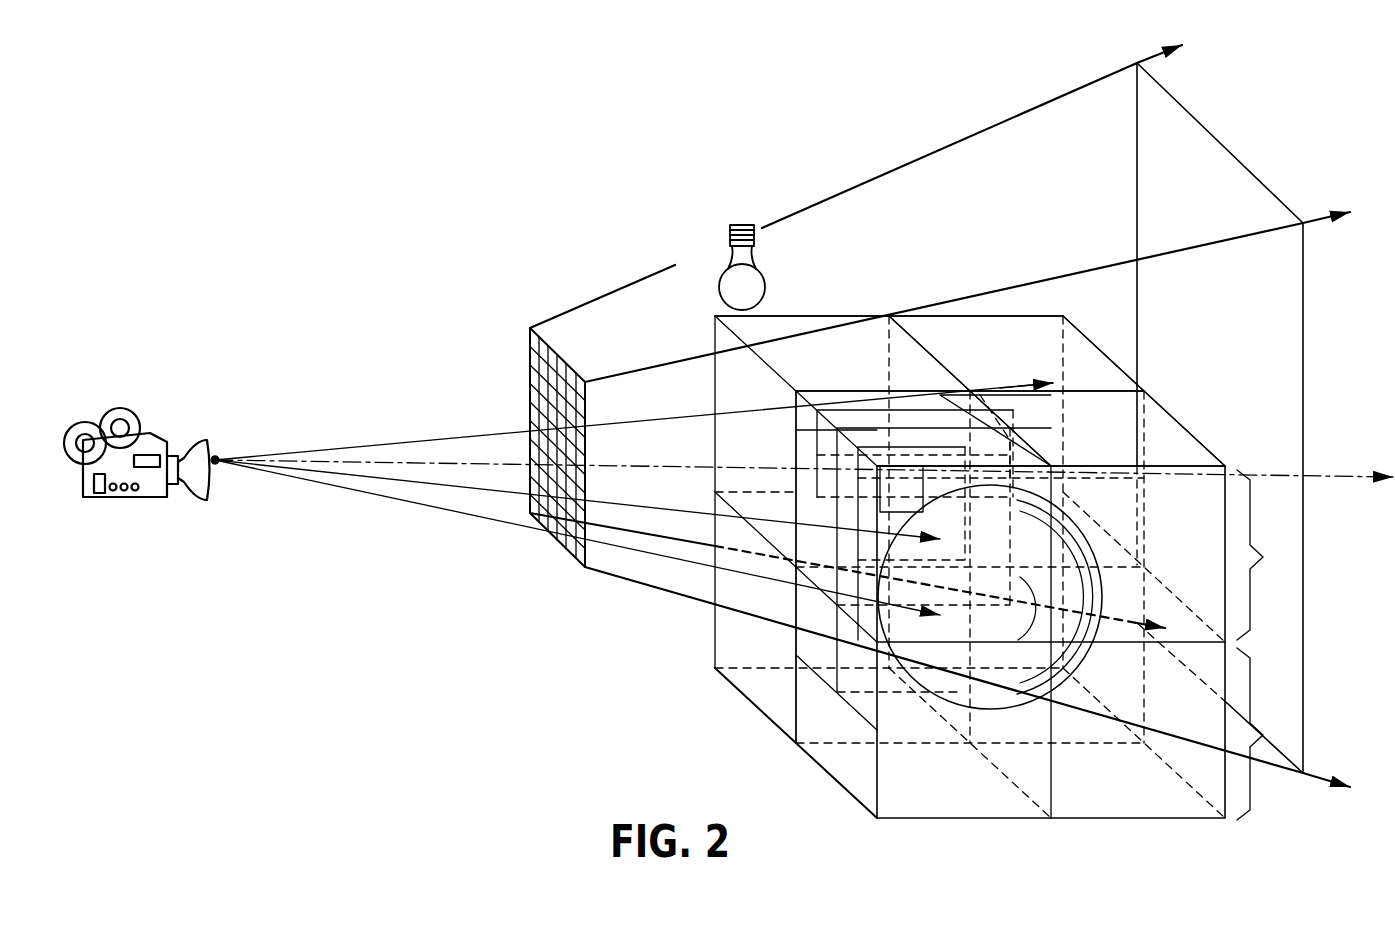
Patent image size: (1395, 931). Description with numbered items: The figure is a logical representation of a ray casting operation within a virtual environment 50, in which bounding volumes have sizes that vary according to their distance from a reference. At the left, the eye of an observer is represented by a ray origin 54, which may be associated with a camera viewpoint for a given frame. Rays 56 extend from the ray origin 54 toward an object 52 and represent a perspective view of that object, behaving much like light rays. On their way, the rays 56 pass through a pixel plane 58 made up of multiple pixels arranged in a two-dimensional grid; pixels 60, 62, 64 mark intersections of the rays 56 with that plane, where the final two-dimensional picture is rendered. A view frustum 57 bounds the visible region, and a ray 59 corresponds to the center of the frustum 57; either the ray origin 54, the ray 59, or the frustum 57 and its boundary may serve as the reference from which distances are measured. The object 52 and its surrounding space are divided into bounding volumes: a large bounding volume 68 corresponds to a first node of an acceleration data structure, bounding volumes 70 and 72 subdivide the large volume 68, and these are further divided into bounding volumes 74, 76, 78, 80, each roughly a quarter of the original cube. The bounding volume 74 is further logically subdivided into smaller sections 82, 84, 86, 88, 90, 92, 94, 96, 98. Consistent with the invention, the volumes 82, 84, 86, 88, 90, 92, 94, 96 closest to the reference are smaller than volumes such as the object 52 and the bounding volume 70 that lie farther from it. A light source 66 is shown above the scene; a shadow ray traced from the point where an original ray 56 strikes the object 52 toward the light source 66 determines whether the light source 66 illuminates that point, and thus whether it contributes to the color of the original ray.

The virtual environment 50 is at (662, 176).
The object 52 is at (913, 690).
The ray origin 54 is at (218, 452).
The rays 56 is at (395, 450).
The view frustum 57 is at (893, 163).
The pixel plane 58 is at (548, 532).
The ray 59 is at (437, 470).
The pixel 60 is at (540, 445).
The pixel 62 is at (530, 430).
The pixel 64 is at (567, 540).
The light source 66 is at (728, 275).
The large bounding volume 68 is at (1020, 316).
The bounding volume 70 is at (1267, 734).
The bounding volume 72 is at (1267, 555).
The bounding volume 74 is at (945, 390).
The bounding volume 76 is at (818, 316).
The bounding volume 78 is at (958, 316).
The bounding volume 80 is at (1118, 408).
The smaller section 82 is at (807, 415).
The smaller section 84 is at (850, 422).
The smaller section 86 is at (840, 447).
The smaller section 88 is at (875, 442).
The smaller section 90 is at (882, 392).
The smaller section 92 is at (965, 378).
The smaller section 94 is at (990, 390).
The smaller section 96 is at (1010, 440).
The smaller section 98 is at (867, 467).